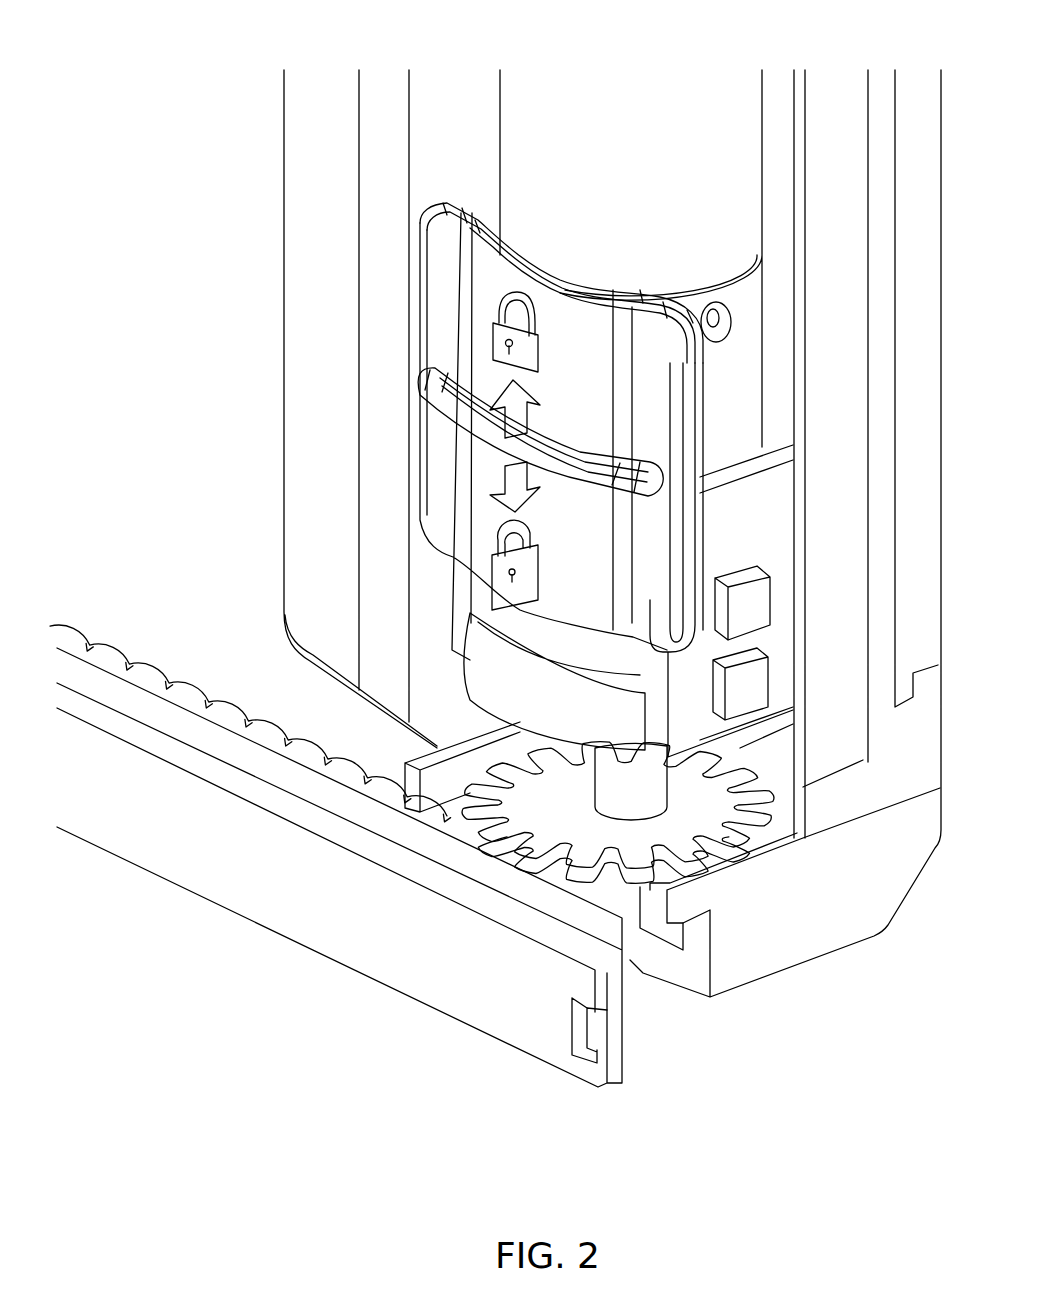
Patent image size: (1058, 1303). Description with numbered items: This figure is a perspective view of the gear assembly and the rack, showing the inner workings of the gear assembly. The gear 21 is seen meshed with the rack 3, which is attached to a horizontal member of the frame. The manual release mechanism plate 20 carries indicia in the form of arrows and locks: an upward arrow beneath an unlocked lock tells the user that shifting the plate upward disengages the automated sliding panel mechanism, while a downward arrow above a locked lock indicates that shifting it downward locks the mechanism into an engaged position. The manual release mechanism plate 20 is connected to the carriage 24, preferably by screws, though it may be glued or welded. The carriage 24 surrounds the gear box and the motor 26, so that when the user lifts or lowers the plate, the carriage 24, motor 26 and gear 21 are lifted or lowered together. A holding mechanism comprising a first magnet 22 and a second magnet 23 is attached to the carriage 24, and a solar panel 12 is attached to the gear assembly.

The rack 3 is at (268, 893).
The solar panel 12 is at (305, 372).
The manual release mechanism plate 20 is at (573, 320).
The gear 21 is at (713, 827).
The first magnet 22 is at (765, 603).
The second magnet 23 is at (757, 682).
The carriage 24 is at (773, 503).
The motor 26 is at (688, 133).